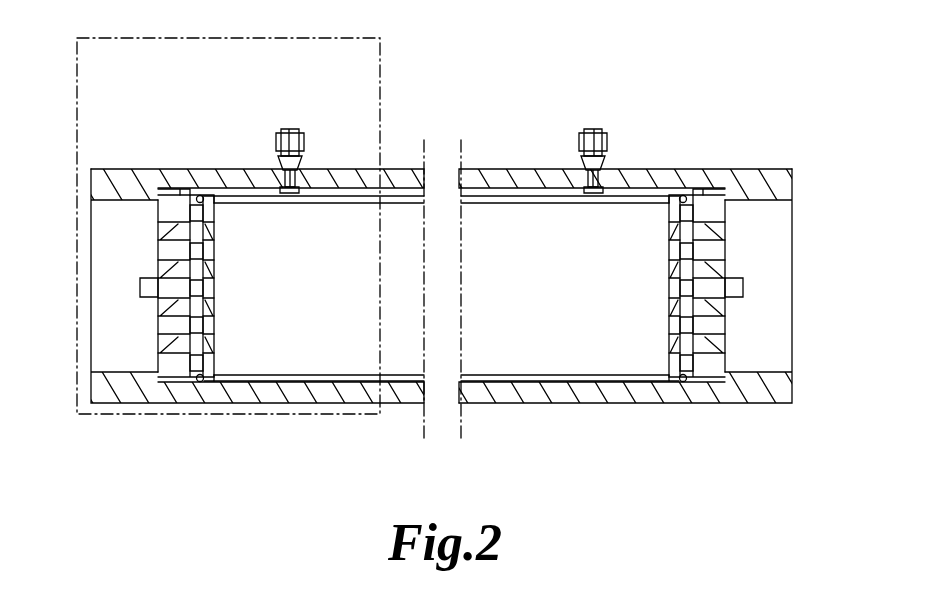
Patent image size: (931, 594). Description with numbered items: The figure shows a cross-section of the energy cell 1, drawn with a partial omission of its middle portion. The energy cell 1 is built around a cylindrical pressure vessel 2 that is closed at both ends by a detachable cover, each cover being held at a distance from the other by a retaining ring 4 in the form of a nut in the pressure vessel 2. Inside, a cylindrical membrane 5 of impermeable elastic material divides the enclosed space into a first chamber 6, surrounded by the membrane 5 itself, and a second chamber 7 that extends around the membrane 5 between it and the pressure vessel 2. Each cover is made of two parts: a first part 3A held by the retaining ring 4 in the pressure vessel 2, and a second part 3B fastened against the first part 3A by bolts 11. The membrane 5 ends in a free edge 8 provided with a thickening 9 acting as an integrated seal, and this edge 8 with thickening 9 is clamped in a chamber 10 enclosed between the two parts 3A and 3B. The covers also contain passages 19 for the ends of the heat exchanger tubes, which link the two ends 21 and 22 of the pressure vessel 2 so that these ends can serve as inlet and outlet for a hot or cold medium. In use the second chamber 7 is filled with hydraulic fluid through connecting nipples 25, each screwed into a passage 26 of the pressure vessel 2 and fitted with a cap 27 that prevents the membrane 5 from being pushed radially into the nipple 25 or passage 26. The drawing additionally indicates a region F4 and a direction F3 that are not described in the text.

The energy cell 1 is at (127, 113).
The pressure vessel 2 is at (344, 180).
The first part 3A is at (166, 378).
The second part 3B is at (207, 380).
The retaining ring 4 is at (110, 385).
The membrane 5 is at (399, 188).
The first chamber 6 is at (527, 210).
The second chamber 7 is at (483, 190).
The free edge 8 is at (233, 190).
The thickening 9 is at (199, 193).
The chamber 10 is at (179, 190).
The bolts 11 is at (140, 286).
The passages 19 is at (168, 250).
The end 21 is at (126, 312).
The end 22 is at (768, 333).
The connecting nipple 25 is at (287, 129).
The passage 26 is at (304, 165).
The cap 27 is at (281, 185).
The force F3 is at (570, 376).
The frame F4 is at (380, 38).